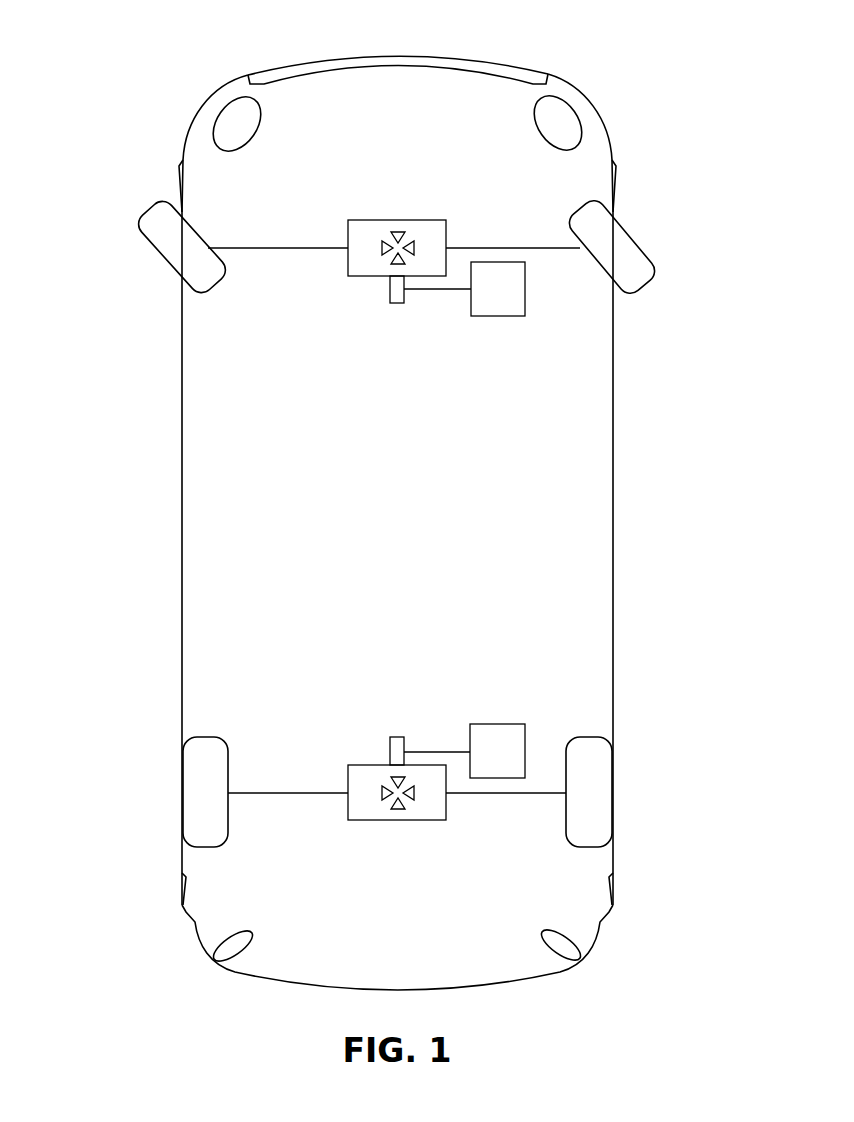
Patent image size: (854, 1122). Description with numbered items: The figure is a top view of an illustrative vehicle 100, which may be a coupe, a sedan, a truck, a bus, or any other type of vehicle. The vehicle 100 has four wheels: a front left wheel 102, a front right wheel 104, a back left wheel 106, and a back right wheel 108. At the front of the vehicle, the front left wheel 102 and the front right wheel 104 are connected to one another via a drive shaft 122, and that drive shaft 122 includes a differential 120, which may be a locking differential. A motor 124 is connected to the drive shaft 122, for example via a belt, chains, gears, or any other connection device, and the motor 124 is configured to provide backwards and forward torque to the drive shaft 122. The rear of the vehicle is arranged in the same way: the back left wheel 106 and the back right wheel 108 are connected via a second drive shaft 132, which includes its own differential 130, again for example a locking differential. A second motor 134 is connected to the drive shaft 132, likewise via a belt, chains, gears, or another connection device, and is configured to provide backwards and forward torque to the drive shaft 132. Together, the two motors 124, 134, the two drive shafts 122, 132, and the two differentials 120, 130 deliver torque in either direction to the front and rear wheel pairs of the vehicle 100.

The vehicle 100 is at (421, 34).
The front left wheel 102 is at (153, 201).
The front right wheel 104 is at (645, 291).
The back left wheel 106 is at (210, 737).
The back right wheel 108 is at (582, 736).
The differential 120 is at (397, 219).
The drive shaft 122 is at (263, 249).
The motor 124 is at (497, 317).
The differential 130 is at (397, 821).
The drive shaft 132 is at (277, 794).
The motor 134 is at (498, 723).